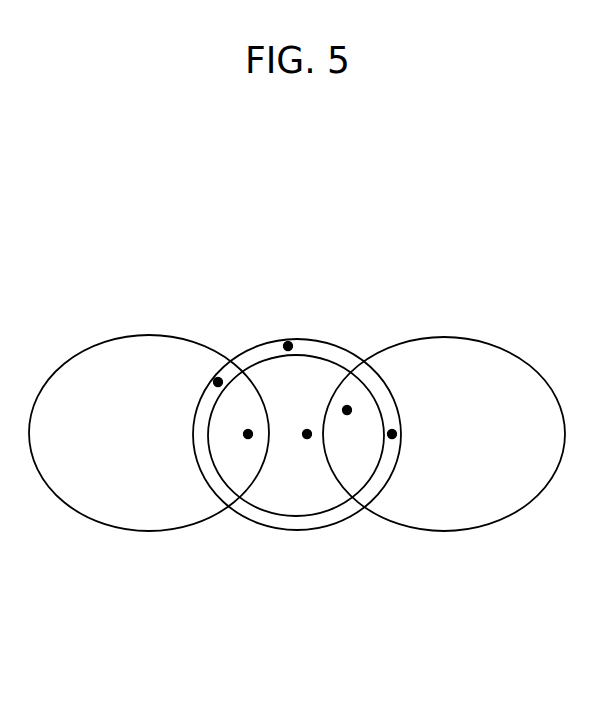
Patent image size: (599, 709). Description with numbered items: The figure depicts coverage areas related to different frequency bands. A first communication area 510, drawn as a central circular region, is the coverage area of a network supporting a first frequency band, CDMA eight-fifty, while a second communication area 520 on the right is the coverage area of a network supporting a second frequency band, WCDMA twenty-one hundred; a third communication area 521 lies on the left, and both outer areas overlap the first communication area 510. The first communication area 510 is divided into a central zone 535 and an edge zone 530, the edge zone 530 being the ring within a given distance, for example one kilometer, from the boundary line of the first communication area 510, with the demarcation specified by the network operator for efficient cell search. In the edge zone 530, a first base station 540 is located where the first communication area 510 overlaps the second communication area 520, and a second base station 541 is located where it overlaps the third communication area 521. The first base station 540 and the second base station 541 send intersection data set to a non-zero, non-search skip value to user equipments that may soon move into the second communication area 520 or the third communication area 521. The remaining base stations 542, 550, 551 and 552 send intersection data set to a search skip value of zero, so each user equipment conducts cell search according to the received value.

The first communication area 510 is at (324, 530).
The second communication area 520 is at (473, 530).
The third communication area 521 is at (150, 530).
The edge zone 530 is at (377, 485).
The central zone 535 is at (252, 465).
The first base station 540 is at (392, 435).
The second base station 541 is at (218, 382).
The base station 542 is at (288, 345).
The base station 550 is at (248, 434).
The base station 551 is at (307, 434).
The base station 552 is at (347, 410).